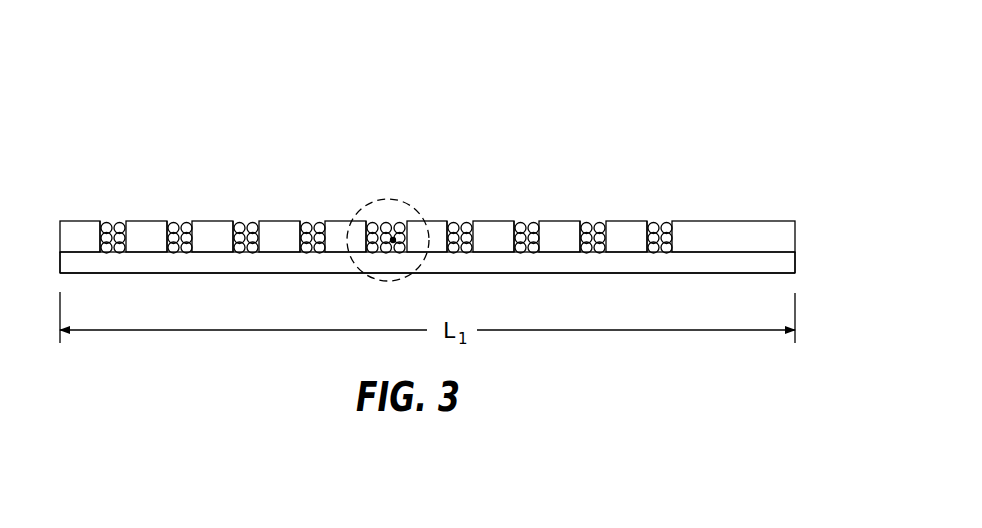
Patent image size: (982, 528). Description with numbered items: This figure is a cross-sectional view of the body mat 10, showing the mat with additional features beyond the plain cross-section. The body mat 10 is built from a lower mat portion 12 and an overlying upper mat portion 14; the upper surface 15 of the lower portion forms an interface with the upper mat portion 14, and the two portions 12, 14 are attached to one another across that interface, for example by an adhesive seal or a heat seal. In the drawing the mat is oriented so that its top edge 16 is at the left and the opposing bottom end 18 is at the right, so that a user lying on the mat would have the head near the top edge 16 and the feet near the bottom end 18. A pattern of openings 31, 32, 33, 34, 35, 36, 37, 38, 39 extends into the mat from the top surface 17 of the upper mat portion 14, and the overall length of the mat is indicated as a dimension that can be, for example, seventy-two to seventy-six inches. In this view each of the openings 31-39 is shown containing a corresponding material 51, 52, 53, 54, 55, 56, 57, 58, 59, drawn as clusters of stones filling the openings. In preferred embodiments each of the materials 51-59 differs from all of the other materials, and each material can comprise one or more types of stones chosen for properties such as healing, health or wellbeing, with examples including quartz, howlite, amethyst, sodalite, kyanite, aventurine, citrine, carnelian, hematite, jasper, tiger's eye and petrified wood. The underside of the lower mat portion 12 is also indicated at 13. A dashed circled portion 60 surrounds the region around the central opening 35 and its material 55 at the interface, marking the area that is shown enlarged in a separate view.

The body mat 10 is at (715, 95).
The lower mat portion 12 is at (297, 260).
The bottom surface of substrate 13 is at (537, 277).
The upper mat portion 14 is at (742, 232).
The upper surface 15 is at (398, 244).
The top edge 16 is at (55, 252).
The top surface 17 is at (72, 218).
The bottom end 18 is at (795, 252).
The opening 31 is at (113, 208).
The opening 32 is at (180, 208).
The opening 33 is at (246, 208).
The opening 34 is at (313, 208).
The opening 35 is at (386, 205).
The opening 36 is at (462, 208).
The opening 37 is at (527, 208).
The opening 38 is at (594, 208).
The opening 39 is at (660, 208).
The material 51 is at (100, 220).
The material 52 is at (167, 220).
The material 53 is at (233, 220).
The material 54 is at (300, 220).
The material 55 is at (366, 220).
The material 56 is at (447, 220).
The material 57 is at (514, 220).
The material 58 is at (580, 220).
The material 59 is at (647, 220).
The circled portion 60 is at (402, 197).